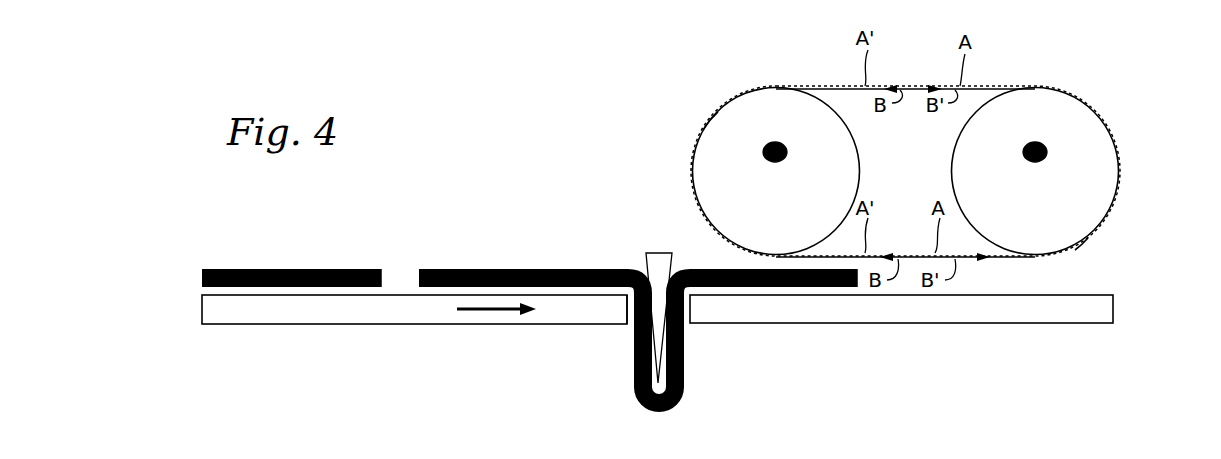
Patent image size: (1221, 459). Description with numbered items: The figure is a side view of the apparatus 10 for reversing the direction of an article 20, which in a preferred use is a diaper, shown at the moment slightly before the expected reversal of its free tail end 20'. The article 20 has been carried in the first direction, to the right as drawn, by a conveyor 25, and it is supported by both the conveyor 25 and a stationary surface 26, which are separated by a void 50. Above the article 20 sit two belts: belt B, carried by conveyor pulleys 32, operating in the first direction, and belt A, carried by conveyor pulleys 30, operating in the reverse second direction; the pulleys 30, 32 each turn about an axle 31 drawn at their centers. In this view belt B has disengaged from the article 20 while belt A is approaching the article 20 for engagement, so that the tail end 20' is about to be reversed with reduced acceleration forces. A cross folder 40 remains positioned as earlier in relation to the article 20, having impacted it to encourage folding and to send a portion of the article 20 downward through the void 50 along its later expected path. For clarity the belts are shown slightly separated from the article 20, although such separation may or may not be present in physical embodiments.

The apparatus 10 is at (1125, 90).
The article 20 is at (529, 293).
The free tail end 20' is at (617, 286).
The conveyor 25 is at (397, 318).
The stationary surface 26 is at (818, 318).
The conveyor pulleys 30 is at (752, 88).
The roller axle 31 is at (772, 147).
The conveyor pulleys 32 is at (703, 130).
The cross folder 40 is at (645, 262).
The void 50 is at (630, 333).